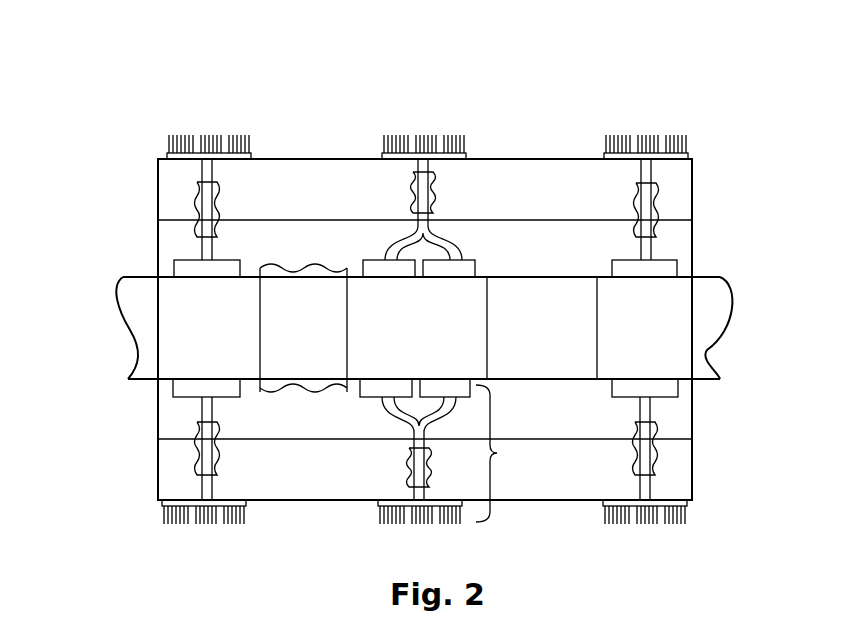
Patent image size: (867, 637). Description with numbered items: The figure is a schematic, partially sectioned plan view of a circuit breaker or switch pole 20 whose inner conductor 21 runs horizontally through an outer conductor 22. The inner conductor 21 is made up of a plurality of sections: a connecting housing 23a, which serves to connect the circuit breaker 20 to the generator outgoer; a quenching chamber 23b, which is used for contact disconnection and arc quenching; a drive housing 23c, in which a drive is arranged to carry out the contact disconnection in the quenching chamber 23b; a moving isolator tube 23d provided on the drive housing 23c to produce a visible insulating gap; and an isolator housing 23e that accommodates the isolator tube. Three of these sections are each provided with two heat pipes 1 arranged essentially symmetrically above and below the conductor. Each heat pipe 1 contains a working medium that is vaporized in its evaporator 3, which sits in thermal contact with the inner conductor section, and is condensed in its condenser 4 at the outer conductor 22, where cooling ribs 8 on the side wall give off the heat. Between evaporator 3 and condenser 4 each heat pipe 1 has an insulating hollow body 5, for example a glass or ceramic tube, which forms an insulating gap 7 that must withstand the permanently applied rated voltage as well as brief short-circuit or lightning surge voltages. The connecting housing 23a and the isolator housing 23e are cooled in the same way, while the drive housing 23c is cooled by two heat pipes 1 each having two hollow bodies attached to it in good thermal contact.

The heat pipe 1 is at (502, 468).
The evaporator 3 is at (660, 265).
The condenser 4 is at (709, 128).
The insulating hollow body 5 is at (653, 210).
The insulating gap 7 is at (657, 423).
The cooling ribs 8 is at (653, 135).
The circuit breaker or switch pole 20 is at (92, 117).
The inner conductor 21 is at (158, 277).
The outer conductor 22 is at (157, 420).
The connecting housing 23a is at (243, 293).
The quenching chamber 23b is at (323, 293).
The drive housing 23c is at (458, 300).
The isolator tube 23d is at (560, 300).
The isolator housing 23e is at (657, 325).